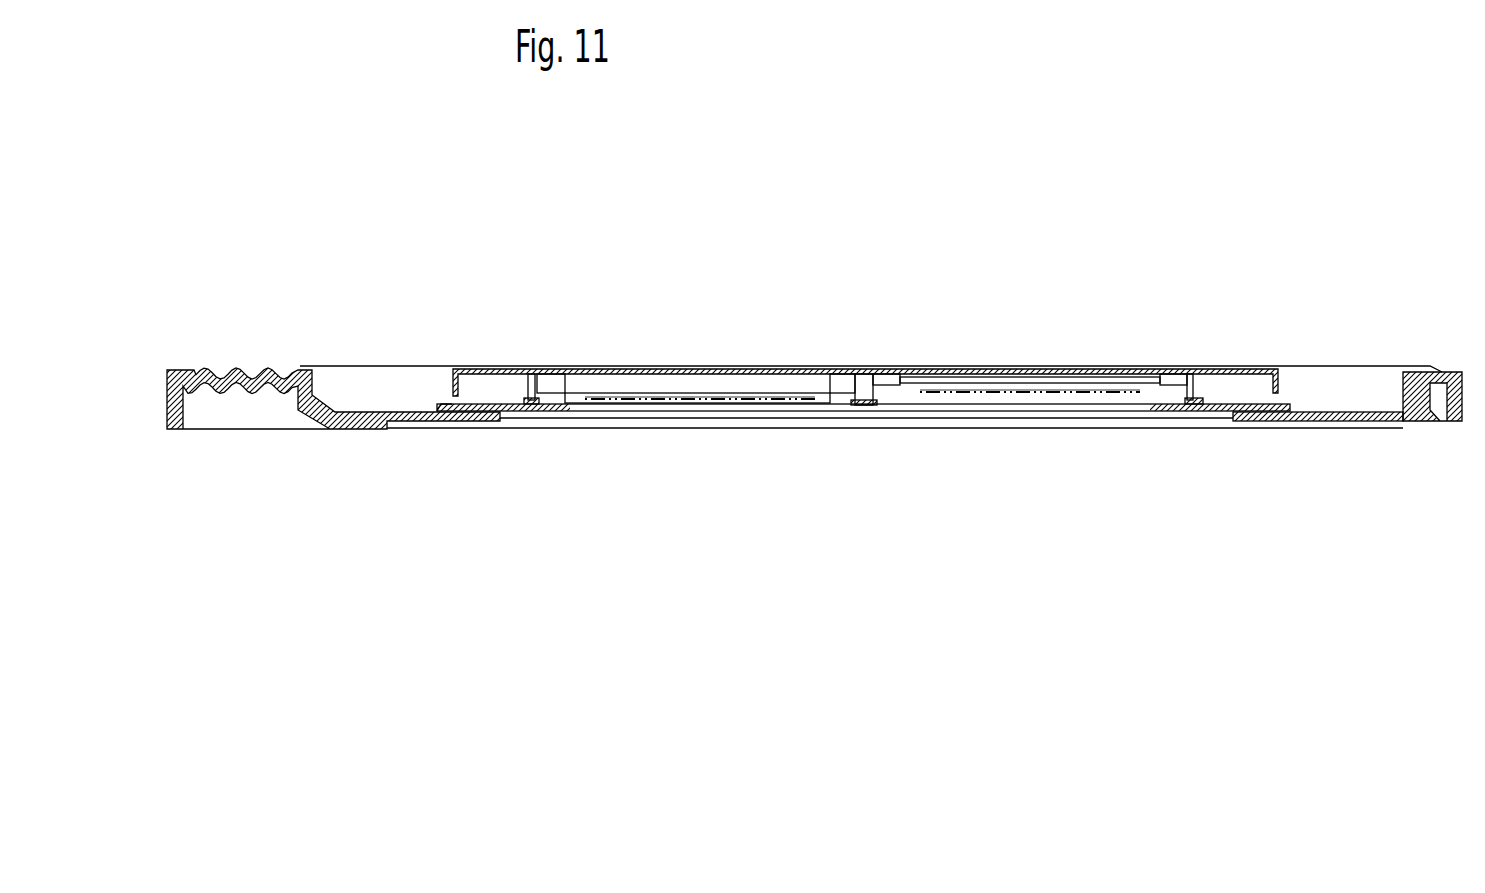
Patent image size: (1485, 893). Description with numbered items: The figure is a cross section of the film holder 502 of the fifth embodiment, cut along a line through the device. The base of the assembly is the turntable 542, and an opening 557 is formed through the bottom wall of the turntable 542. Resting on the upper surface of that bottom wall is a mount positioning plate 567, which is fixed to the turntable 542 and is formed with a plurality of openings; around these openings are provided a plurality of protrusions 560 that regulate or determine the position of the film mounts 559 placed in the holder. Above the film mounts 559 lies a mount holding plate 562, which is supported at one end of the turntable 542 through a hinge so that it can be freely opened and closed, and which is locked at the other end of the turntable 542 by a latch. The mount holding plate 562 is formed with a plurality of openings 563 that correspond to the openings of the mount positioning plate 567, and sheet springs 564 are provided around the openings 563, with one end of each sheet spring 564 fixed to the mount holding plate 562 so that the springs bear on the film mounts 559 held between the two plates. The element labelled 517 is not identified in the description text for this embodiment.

The film holder 502 is at (1370, 421).
The turntable 542 is at (392, 413).
The opening 557 is at (497, 417).
The film mount 559 is at (657, 396).
The protrusion 560 is at (532, 374).
The mount holding plate 562 is at (468, 369).
The opening 563 is at (618, 369).
The sheet spring 564 is at (553, 383).
The mount positioning plate 567 is at (447, 406).
The liquid crystal layer 517 is at (727, 398).